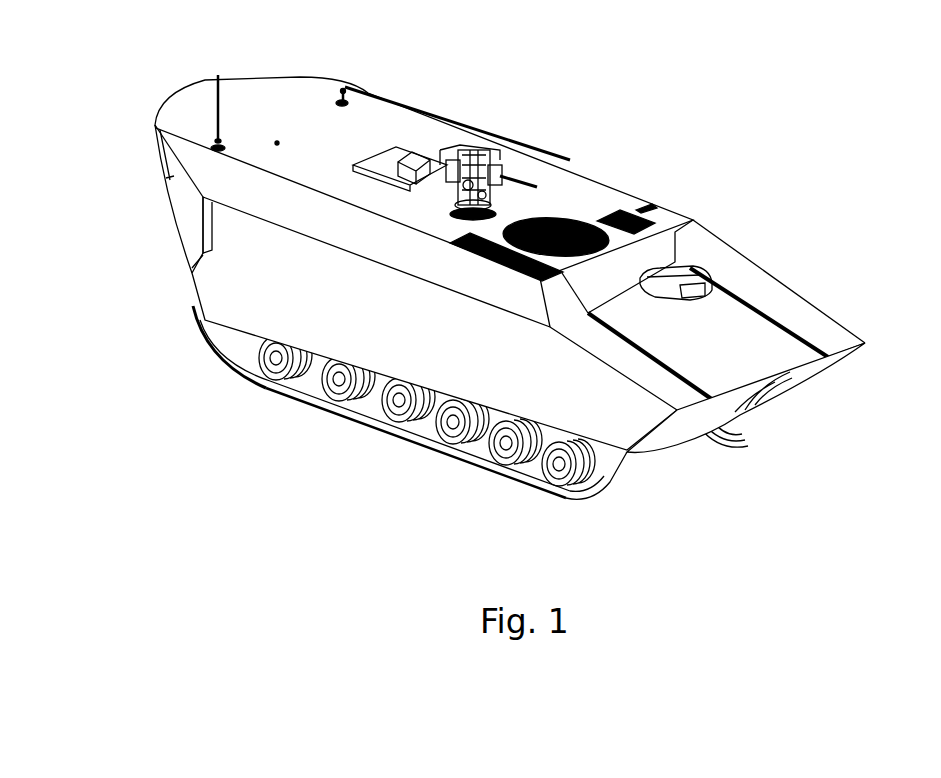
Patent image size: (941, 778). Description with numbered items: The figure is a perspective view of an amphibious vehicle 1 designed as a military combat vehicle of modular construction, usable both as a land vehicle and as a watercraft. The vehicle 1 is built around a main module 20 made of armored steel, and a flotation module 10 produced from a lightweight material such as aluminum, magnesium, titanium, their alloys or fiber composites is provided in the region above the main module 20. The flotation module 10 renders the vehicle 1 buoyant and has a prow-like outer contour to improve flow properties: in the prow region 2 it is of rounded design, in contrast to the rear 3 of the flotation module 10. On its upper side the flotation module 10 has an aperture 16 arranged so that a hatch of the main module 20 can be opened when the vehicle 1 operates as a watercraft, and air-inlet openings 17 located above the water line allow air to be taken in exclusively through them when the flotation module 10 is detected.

The amphibious vehicle 1 is at (530, 92).
The prow region 2 is at (142, 153).
The rear 3 is at (788, 262).
The flotation module 10 is at (178, 112).
The aperture 16 is at (753, 367).
The air-inlet openings 17 is at (555, 217).
The main module 20 is at (710, 325).